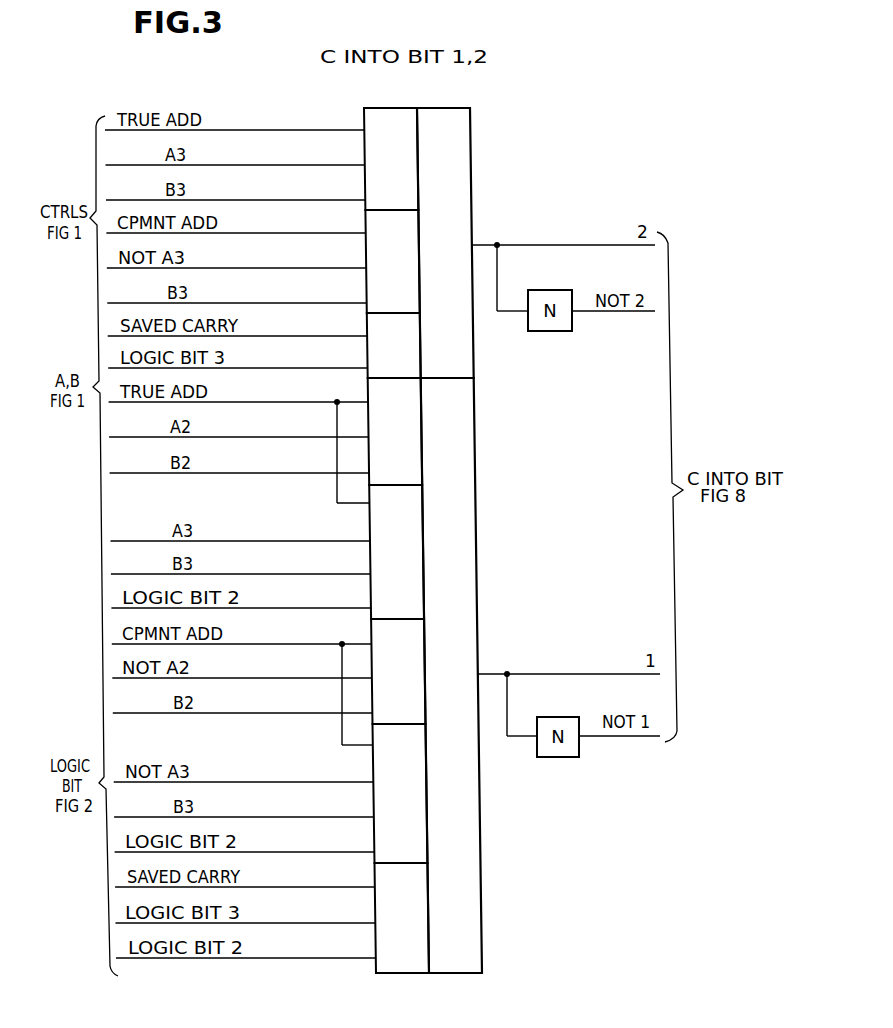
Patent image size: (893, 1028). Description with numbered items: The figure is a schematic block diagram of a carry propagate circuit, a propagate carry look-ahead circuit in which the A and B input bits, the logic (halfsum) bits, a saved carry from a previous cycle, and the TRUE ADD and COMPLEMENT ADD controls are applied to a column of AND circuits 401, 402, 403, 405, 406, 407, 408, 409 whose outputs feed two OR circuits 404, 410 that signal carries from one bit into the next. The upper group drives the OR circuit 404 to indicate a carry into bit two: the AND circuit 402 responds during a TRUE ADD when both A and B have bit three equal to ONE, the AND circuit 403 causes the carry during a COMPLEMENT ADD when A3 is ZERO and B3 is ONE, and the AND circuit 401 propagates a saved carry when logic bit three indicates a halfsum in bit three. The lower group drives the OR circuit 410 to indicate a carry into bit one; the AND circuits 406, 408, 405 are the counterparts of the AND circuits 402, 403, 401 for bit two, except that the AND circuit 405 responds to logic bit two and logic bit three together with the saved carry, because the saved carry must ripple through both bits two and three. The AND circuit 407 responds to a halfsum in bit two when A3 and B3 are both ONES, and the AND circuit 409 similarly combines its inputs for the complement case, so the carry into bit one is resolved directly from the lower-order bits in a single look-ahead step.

The AND circuit 401 is at (368, 347).
The AND circuit 402 is at (368, 118).
The AND circuit 403 is at (370, 220).
The OR circuit 404 is at (463, 134).
The AND circuit 405 is at (380, 966).
The AND circuit 406 is at (373, 390).
The AND circuit 407 is at (375, 522).
The AND circuit 408 is at (375, 630).
The AND circuit 409 is at (378, 767).
The OR circuit 410 is at (465, 428).